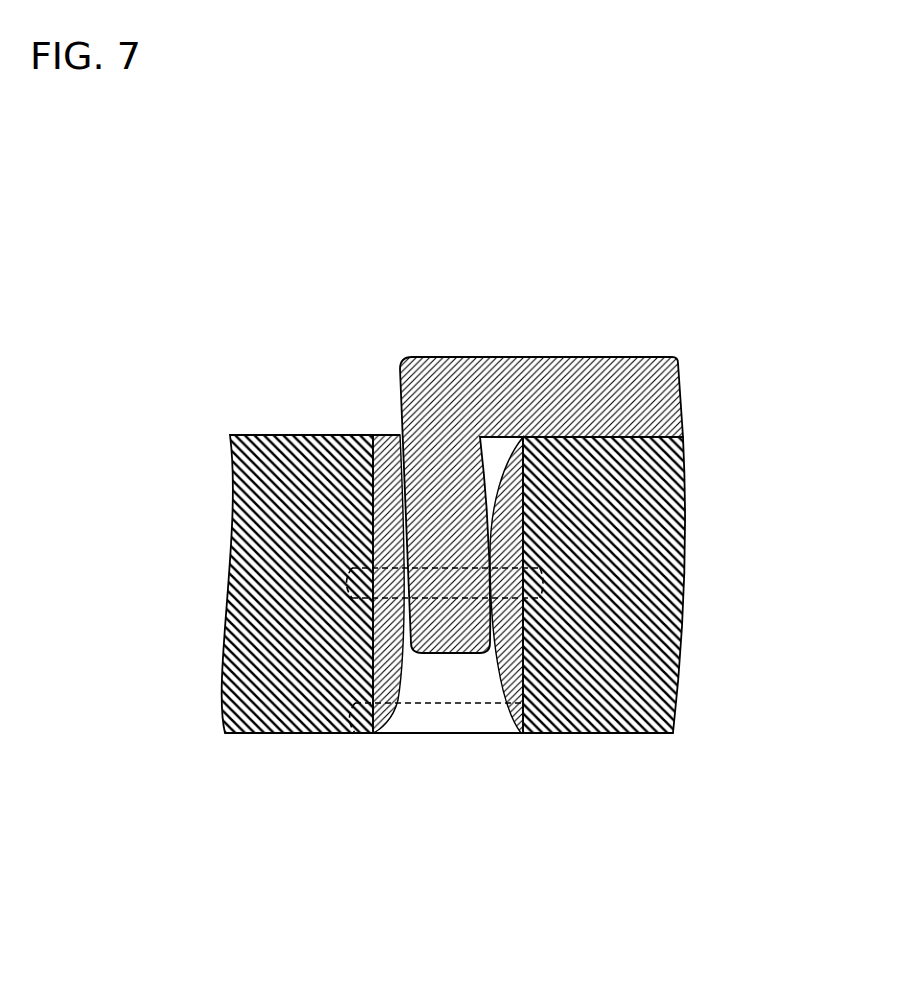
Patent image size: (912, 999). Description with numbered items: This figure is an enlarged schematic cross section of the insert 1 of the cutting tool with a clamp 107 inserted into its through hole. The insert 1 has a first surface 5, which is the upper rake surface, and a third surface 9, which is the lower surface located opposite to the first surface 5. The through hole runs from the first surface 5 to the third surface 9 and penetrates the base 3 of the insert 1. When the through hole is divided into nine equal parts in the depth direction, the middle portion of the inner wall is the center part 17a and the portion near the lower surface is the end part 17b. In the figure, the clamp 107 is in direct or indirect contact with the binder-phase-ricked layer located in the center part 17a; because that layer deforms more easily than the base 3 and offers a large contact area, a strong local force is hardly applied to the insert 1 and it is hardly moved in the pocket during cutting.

The insert 1 is at (270, 418).
The base 3 is at (267, 590).
The first surface 5 is at (313, 435).
The third surface 9 is at (298, 733).
The clamp 107 is at (603, 382).
The center part 17a is at (413, 583).
The end part 17b is at (390, 720).